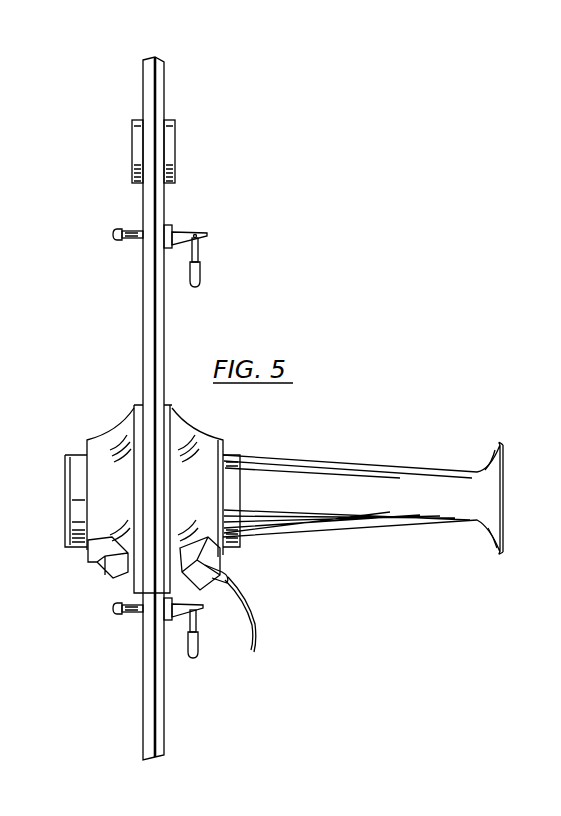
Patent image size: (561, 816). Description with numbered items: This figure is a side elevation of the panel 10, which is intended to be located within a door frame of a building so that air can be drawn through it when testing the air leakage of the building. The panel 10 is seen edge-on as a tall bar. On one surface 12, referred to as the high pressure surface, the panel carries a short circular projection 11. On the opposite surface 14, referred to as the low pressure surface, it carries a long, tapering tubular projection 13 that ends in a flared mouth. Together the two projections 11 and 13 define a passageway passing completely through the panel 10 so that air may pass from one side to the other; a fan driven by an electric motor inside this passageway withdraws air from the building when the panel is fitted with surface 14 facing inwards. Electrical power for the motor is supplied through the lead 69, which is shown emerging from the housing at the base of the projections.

The panel 10 is at (135, 95).
The short circular projection 11 is at (108, 442).
The high pressure surface 12 is at (143, 206).
The long tapering tubular projection 13 is at (415, 470).
The low pressure surface 14 is at (165, 199).
The lead 69 is at (251, 627).